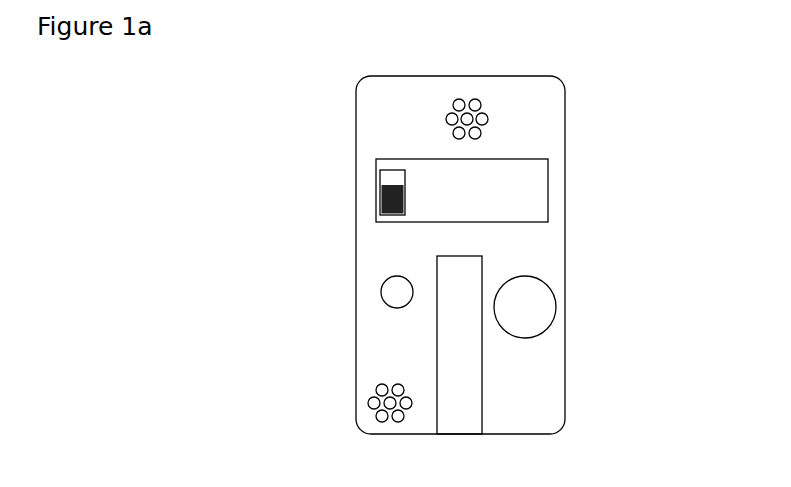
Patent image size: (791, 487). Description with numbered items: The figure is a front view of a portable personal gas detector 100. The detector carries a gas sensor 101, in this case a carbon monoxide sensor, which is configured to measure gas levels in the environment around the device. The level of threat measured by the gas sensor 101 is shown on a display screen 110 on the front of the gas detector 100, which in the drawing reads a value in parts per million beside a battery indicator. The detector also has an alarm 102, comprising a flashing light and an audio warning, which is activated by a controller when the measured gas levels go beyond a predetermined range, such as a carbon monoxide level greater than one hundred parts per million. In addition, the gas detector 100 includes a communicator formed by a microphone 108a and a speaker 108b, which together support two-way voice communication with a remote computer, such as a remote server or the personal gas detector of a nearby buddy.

The portable personal gas detector 100 is at (212, 254).
The gas sensor 101 is at (523, 307).
The alarm 102 is at (381, 292).
The microphone 108a is at (383, 412).
The speaker 108b is at (450, 119).
The display screen 110 is at (532, 167).